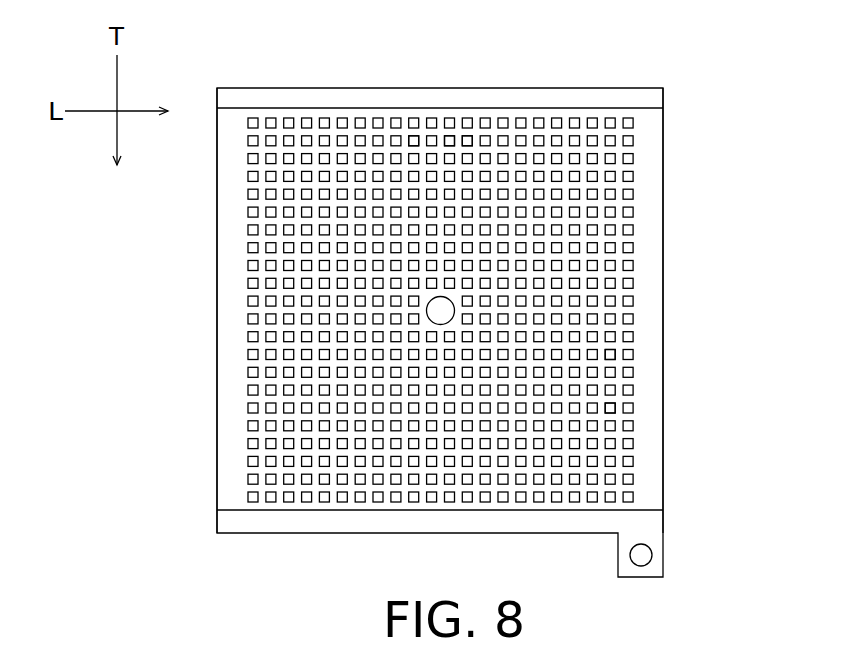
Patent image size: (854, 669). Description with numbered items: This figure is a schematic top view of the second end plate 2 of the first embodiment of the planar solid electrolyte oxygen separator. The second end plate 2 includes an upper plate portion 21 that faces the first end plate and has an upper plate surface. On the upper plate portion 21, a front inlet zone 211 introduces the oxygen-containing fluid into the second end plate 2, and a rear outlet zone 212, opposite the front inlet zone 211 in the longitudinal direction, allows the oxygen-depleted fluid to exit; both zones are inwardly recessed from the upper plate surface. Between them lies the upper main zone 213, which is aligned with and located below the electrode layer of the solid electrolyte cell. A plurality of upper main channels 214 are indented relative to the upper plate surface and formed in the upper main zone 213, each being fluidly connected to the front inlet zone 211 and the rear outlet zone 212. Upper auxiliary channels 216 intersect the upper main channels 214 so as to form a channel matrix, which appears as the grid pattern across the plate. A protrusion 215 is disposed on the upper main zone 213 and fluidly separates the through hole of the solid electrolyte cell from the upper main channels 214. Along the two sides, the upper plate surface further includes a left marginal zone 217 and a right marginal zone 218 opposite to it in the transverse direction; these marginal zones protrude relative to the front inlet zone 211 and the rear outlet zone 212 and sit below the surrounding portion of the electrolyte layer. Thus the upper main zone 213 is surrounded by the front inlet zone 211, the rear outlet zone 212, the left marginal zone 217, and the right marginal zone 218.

The second end plate 2 is at (690, 127).
The upper plate portion 21 is at (636, 184).
The front inlet zone 211 is at (225, 263).
The rear outlet zone 212 is at (652, 250).
The upper main zone 213 is at (414, 140).
The upper main channels 214 is at (613, 400).
The protrusion 215 is at (455, 316).
The upper auxiliary channels 216 is at (476, 140).
The left marginal zone 217 is at (600, 97).
The right marginal zone 218 is at (550, 523).